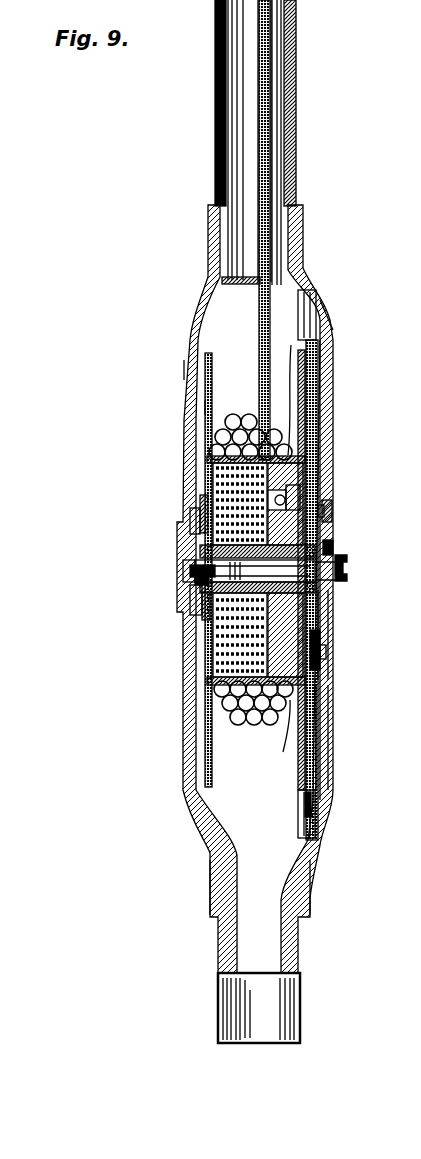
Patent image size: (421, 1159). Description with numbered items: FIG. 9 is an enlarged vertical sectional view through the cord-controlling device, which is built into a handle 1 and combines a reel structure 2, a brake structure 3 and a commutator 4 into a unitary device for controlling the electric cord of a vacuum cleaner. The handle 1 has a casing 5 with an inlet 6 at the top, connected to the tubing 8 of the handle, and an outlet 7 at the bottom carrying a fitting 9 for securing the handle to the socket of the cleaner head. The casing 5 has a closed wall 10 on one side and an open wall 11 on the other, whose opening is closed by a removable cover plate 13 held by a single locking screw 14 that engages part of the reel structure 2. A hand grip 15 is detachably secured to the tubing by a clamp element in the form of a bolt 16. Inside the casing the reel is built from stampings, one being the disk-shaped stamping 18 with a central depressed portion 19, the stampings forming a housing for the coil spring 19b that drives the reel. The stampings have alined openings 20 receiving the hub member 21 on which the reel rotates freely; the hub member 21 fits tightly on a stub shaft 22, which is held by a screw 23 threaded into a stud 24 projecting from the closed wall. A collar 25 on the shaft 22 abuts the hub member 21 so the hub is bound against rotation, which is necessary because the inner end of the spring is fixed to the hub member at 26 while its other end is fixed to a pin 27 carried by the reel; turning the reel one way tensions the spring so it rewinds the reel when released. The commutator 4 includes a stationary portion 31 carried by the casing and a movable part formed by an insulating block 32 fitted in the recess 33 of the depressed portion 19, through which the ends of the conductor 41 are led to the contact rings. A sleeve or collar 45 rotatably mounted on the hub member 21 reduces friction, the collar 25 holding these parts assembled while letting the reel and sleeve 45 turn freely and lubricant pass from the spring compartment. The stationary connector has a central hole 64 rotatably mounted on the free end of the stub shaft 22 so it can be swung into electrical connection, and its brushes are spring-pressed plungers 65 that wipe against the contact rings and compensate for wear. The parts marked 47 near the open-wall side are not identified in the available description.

The handle 1 is at (296, 190).
The reel structure 2 is at (207, 475).
The brake structure 3 is at (200, 528).
The commutator 4 is at (305, 497).
The casing 5 is at (198, 322).
The inlet 6 is at (238, 290).
The outlet 7 is at (245, 908).
The tubing 8 is at (296, 118).
The fitting 9 is at (300, 975).
The closed wall 10 is at (185, 367).
The open wall 11 is at (323, 300).
The removable cover plate 13 is at (334, 426).
The locking screw 14 is at (347, 563).
The hand grip 15 is at (212, 395).
The bolt 16 is at (208, 407).
The stamping 18 is at (330, 366).
The depressed portion 19 is at (292, 394).
The coil spring 19b is at (212, 665).
The alined openings 20 is at (192, 563).
The hub member 21 is at (205, 606).
The stub shaft 22 is at (252, 571).
The screw 23 is at (200, 576).
The stud 24 is at (192, 596).
The collar 25 is at (315, 596).
The spring inner-end fixing 26 is at (190, 546).
The pin 27 is at (268, 492).
The stationary portion 31 is at (333, 386).
The insulating block 32 is at (330, 608).
The recess 33 is at (330, 693).
The conductor 41 is at (332, 511).
The collar 45 is at (251, 597).
The clamp bracket 47 is at (314, 828).
The centrally located hole 64 is at (333, 546).
The plungers 65 is at (326, 658).